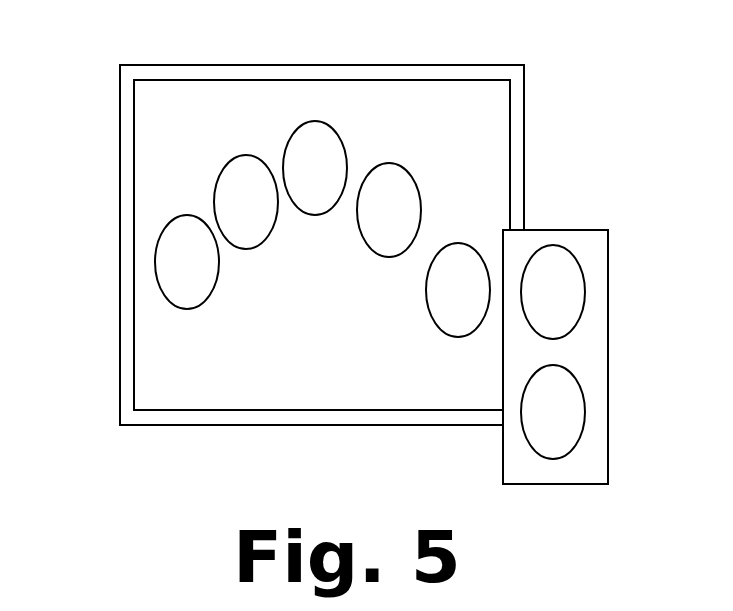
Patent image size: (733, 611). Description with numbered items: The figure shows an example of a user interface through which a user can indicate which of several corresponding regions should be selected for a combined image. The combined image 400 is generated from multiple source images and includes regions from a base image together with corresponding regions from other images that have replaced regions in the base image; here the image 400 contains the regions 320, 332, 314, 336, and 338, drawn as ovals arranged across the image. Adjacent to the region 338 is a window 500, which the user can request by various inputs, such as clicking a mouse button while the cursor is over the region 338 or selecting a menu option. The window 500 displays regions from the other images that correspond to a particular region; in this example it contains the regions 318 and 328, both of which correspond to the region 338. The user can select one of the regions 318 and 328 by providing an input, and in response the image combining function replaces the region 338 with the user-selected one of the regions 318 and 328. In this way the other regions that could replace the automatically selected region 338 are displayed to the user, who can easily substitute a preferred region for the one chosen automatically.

The image 400 is at (510, 65).
The window 500 is at (598, 484).
The region 314 is at (340, 137).
The region 318 is at (577, 260).
The region 320 is at (167, 223).
The region 328 is at (578, 385).
The region 332 is at (222, 166).
The region 336 is at (415, 178).
The region 338 is at (480, 252).